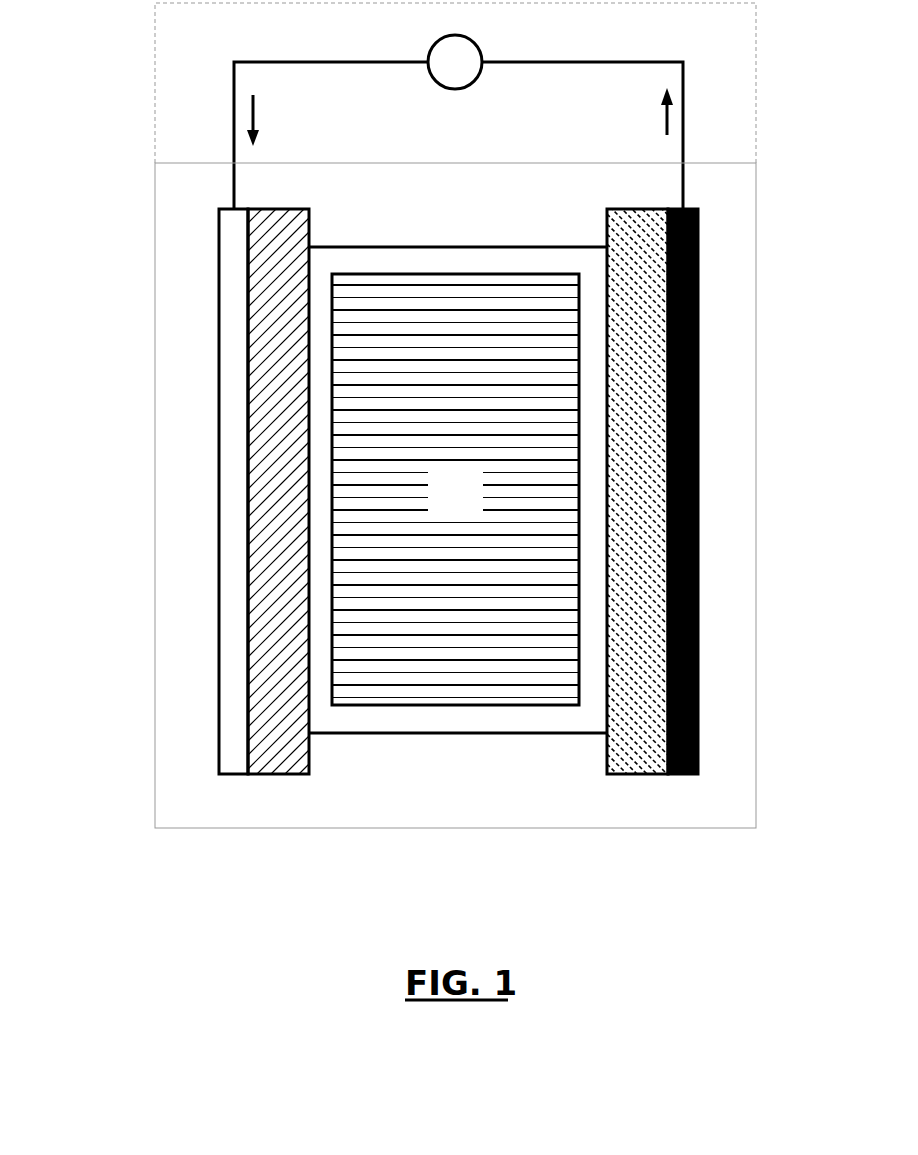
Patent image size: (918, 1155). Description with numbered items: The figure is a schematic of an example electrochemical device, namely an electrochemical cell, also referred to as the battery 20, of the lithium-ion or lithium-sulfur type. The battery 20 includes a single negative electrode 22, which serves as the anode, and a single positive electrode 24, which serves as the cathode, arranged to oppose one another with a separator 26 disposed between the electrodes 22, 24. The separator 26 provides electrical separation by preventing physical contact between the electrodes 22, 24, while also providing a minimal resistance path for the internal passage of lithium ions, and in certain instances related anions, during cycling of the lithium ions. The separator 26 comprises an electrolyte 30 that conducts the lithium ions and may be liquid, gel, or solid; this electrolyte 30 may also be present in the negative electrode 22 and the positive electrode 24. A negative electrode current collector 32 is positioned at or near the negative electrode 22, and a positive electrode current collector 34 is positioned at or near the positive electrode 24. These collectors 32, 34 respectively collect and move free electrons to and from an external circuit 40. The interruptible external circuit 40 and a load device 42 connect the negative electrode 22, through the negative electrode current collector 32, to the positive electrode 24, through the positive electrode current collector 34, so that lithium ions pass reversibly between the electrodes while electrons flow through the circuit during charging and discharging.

The electrochemical cell 20 is at (421, 518).
The negative electrode 22 is at (637, 774).
The positive electrode 24 is at (278, 774).
The separator 26 is at (455, 733).
The electrolyte 30 is at (455, 489).
The negative electrode current collector 32 is at (698, 492).
The positive electrode current collector 34 is at (219, 492).
The external circuit 40 is at (398, 106).
The load device 42 is at (455, 62).